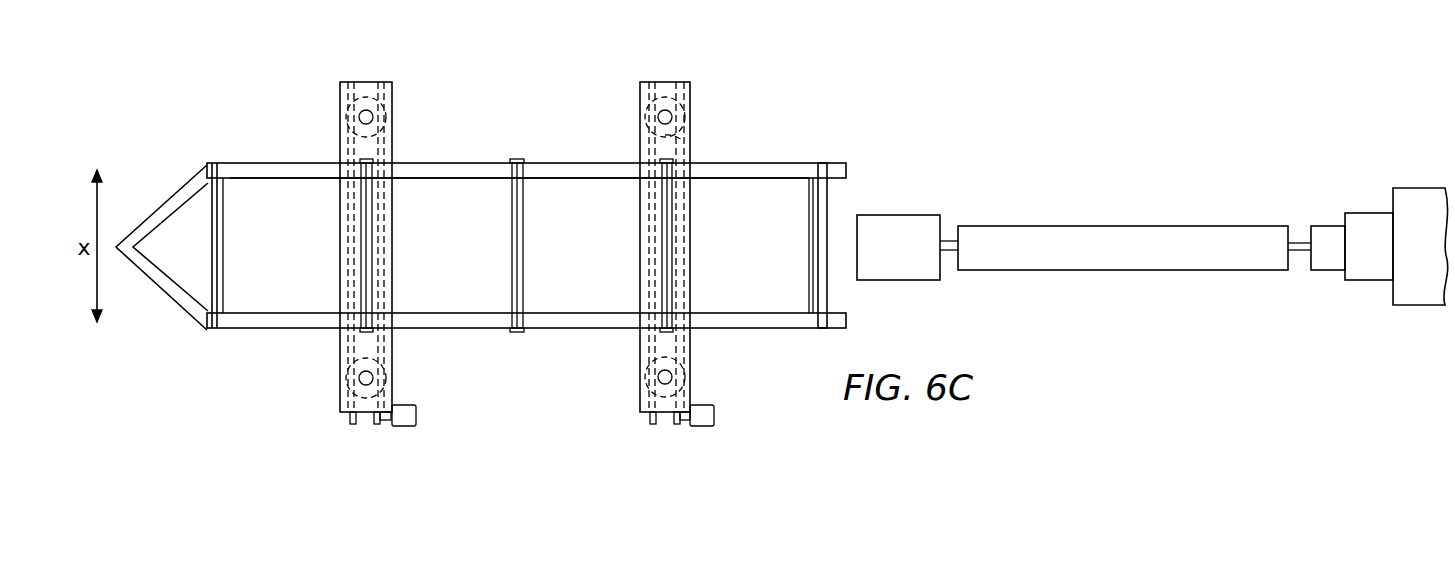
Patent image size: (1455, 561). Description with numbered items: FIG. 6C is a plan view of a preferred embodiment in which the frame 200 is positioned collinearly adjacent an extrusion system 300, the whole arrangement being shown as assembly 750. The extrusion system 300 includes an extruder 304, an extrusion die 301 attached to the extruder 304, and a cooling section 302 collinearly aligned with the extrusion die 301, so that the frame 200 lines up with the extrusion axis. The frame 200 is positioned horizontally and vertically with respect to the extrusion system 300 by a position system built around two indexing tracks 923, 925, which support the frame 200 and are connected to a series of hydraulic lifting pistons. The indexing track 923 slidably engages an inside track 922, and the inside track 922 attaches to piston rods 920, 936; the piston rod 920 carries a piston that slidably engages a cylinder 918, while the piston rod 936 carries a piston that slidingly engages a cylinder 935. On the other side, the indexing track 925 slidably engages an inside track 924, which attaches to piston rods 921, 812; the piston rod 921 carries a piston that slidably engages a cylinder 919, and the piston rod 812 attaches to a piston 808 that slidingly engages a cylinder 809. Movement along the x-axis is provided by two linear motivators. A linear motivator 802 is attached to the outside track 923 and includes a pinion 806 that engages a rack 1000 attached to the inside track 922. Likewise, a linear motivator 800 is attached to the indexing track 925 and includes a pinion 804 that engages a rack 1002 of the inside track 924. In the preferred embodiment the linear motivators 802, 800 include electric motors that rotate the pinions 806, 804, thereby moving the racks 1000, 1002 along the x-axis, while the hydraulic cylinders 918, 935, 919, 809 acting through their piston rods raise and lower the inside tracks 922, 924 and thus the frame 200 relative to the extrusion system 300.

The cleaning device frame assembly 750 is at (262, 62).
The frame 200 is at (468, 155).
The piston rod 936 is at (368, 95).
The cylinder 935 is at (352, 132).
The inside track 922 is at (355, 153).
The indexing track 923 is at (342, 232).
The rack 1000 is at (388, 216).
The rack 1002 is at (688, 216).
The indexing track 925 is at (692, 248).
The inside track 924 is at (654, 150).
The piston rod 812 is at (667, 92).
The cylinder 809 is at (652, 130).
The piston 808 is at (690, 136).
The cylinder 918 is at (348, 368).
The cylinder 919 is at (647, 368).
The piston rod 920 is at (372, 410).
The piston rod 921 is at (670, 410).
The pinion 806 is at (387, 422).
The pinion 804 is at (688, 422).
The linear motivator 802 is at (415, 420).
The linear motivator 800 is at (716, 422).
The extrusion system 300 is at (897, 215).
The cooling section 302 is at (1125, 226).
The extrusion die 301 is at (1355, 213).
The extruder 304 is at (1422, 188).